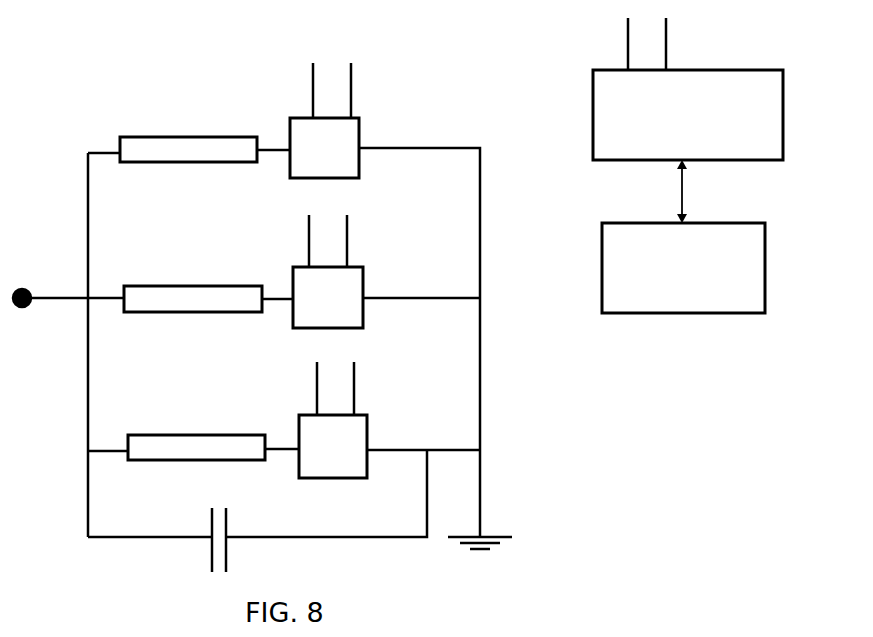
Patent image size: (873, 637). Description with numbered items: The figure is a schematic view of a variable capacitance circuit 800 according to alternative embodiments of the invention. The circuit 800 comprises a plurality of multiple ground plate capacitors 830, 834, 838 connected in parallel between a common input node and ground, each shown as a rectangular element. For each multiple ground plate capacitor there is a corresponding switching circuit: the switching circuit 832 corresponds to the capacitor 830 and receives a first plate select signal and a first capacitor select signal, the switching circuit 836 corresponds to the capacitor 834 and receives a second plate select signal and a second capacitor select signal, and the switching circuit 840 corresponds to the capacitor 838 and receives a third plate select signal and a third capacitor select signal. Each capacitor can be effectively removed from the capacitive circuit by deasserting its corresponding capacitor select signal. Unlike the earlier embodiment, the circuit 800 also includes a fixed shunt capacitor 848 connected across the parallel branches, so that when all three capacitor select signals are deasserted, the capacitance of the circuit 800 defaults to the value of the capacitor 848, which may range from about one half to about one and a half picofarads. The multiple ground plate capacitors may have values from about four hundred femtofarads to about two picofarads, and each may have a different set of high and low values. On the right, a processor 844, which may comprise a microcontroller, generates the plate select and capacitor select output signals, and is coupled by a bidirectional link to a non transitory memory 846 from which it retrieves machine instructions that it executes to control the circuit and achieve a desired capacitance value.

The variable capacitance circuit 800 is at (123, 87).
The multiple ground plate capacitor 830 is at (187, 145).
The switching circuit 832 is at (338, 162).
The multiple ground plate capacitor 834 is at (195, 291).
The switching circuit 836 is at (350, 311).
The multiple ground plate capacitor 838 is at (206, 443).
The switching circuit 840 is at (328, 467).
The processor 844 is at (750, 83).
The non transitory memory 846 is at (733, 233).
The fixed shunt capacitor 848 is at (218, 505).